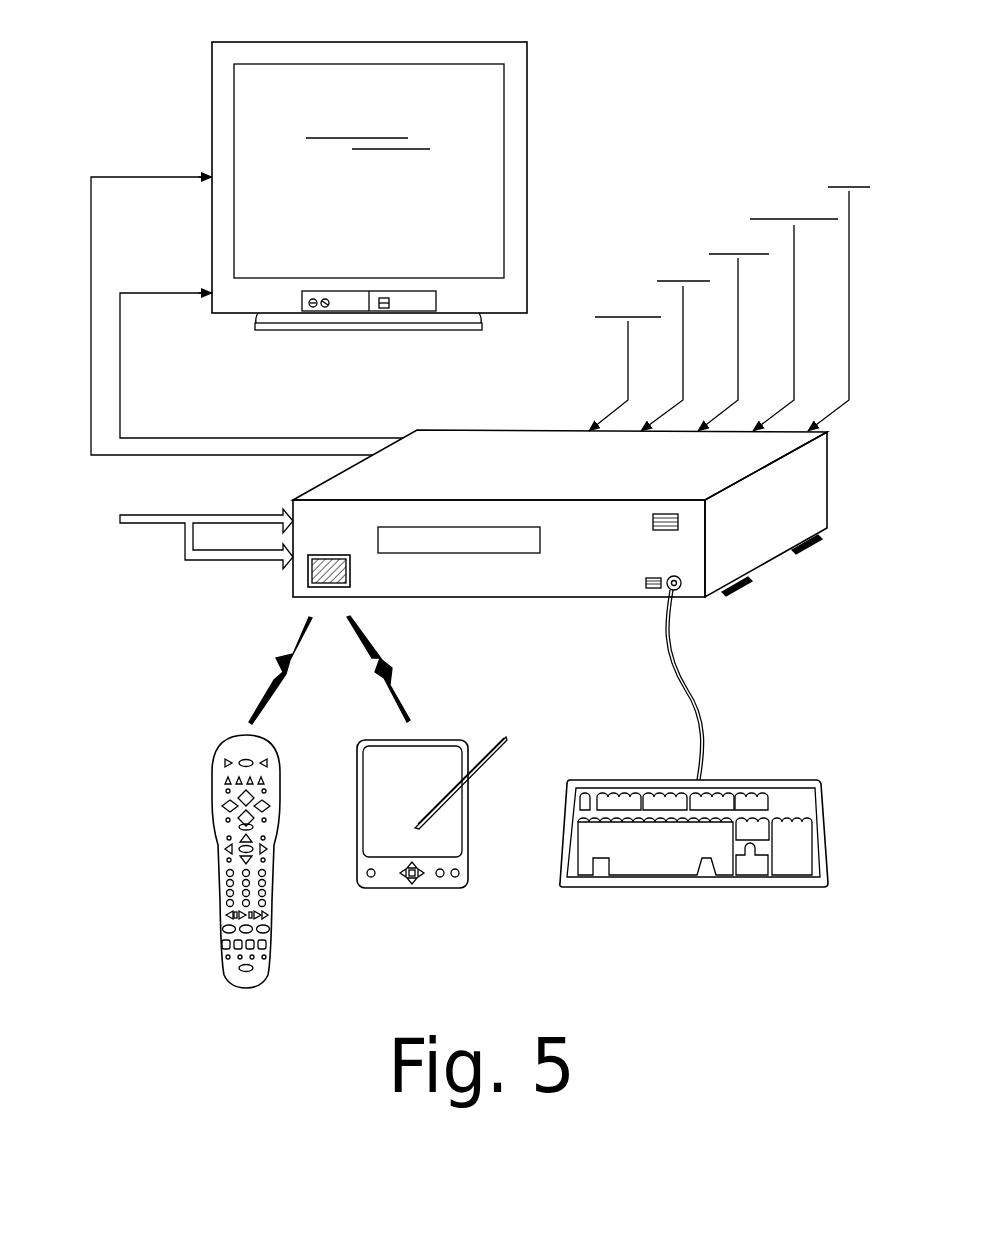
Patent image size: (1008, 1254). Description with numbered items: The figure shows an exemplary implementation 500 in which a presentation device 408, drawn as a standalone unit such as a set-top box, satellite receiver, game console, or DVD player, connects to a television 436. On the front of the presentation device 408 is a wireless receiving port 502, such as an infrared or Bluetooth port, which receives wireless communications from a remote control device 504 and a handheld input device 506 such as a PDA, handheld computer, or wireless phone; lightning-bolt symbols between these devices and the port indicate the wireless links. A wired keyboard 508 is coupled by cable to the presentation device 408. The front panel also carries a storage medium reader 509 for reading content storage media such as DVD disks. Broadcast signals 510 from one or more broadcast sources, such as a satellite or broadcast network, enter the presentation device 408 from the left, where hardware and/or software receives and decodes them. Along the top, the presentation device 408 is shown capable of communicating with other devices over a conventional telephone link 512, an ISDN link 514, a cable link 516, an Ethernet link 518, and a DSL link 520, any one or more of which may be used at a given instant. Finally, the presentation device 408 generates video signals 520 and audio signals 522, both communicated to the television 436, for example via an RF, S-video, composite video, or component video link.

The exemplary implementation 500 is at (637, 68).
The television 436 is at (478, 267).
The presentation device 408 is at (473, 430).
The wireless receiving port 502 is at (340, 553).
The storage medium reader 509 is at (458, 555).
The broadcast signals 510 is at (170, 523).
The remote control device 504 is at (212, 760).
The handheld input device 506 is at (428, 740).
The wired keyboard 508 is at (738, 780).
The telephone link 512 is at (628, 278).
The ISDN link 514 is at (684, 246).
The cable link 516 is at (738, 213).
The Ethernet link 518 is at (793, 180).
The DSL link 520 is at (176, 209).
The audio signals 522 is at (176, 326).